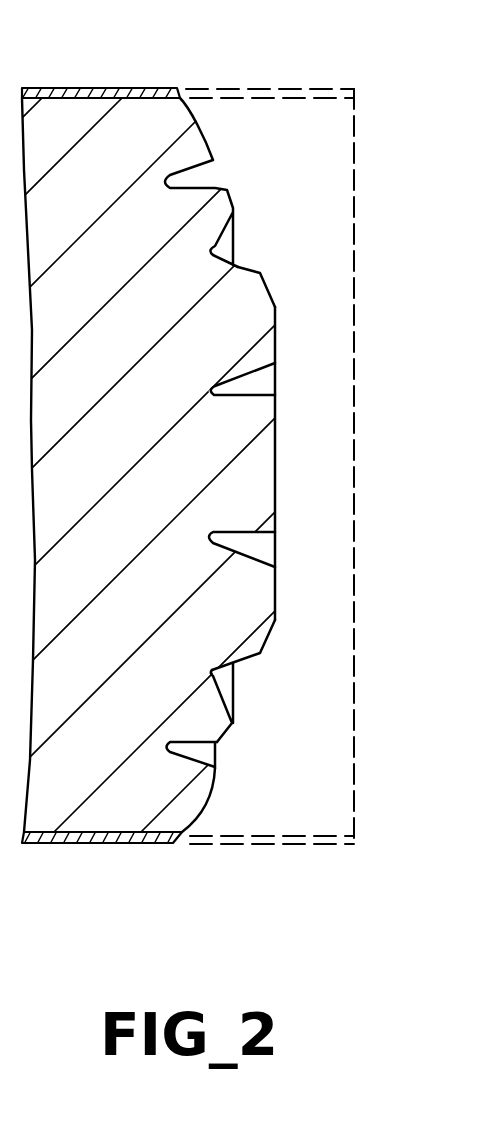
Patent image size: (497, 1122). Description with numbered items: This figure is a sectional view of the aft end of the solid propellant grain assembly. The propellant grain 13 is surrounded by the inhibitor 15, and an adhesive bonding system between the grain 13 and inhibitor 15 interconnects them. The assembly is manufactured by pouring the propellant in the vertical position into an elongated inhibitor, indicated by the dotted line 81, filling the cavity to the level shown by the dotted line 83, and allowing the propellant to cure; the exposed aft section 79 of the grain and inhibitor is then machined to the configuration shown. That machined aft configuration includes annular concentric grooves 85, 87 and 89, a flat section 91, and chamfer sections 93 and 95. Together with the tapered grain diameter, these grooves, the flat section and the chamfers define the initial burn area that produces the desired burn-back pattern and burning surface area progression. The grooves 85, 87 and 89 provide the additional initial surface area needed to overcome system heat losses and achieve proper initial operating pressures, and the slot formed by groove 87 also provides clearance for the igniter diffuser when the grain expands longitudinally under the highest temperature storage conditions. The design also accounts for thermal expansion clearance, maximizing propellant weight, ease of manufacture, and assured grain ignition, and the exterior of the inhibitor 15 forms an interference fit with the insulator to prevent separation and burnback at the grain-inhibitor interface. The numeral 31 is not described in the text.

The propellant grain 13 is at (122, 137).
The inhibitor 15 is at (157, 90).
The thread form 31 is at (302, 275).
The exposed aft section 79 is at (380, 212).
The dotted line showing elongated inhibitor 81 is at (263, 90).
The dotted line showing propellant fill position 83 is at (355, 330).
The annular concentric groove 85 is at (250, 542).
The annular concentric groove 87 is at (225, 682).
The annular concentric groove 89 is at (210, 752).
The flat section 91 is at (275, 445).
The chamfer section 93 is at (270, 635).
The chamfer section 95 is at (192, 822).